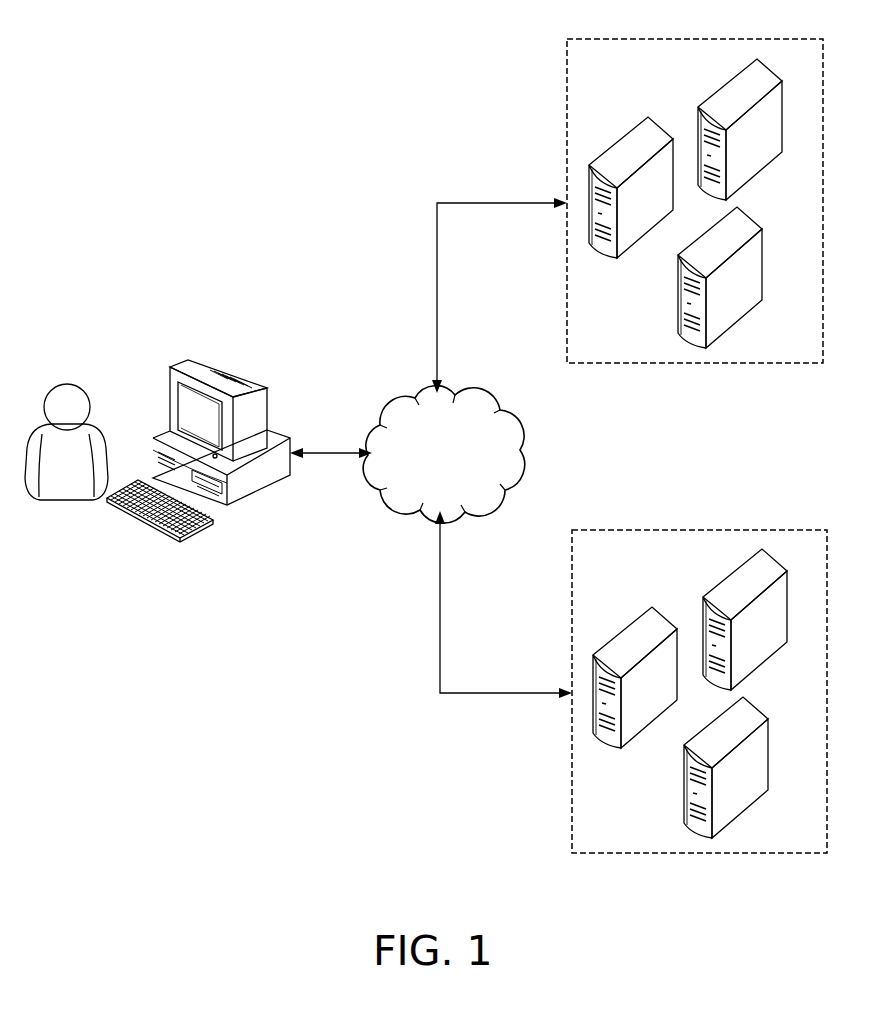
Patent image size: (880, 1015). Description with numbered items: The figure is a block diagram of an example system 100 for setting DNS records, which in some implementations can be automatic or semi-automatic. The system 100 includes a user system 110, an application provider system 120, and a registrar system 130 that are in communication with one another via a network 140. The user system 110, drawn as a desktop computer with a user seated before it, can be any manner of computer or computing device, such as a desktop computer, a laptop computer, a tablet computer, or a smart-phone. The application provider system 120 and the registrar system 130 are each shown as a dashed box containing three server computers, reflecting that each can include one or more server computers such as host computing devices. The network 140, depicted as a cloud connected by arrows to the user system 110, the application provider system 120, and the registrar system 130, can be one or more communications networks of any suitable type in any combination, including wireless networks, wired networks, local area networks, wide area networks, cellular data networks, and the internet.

The system 100 is at (223, 121).
The user system 110 is at (233, 368).
The application provider system 120 is at (790, 38).
The registrar system 130 is at (795, 529).
The network 140 is at (478, 398).